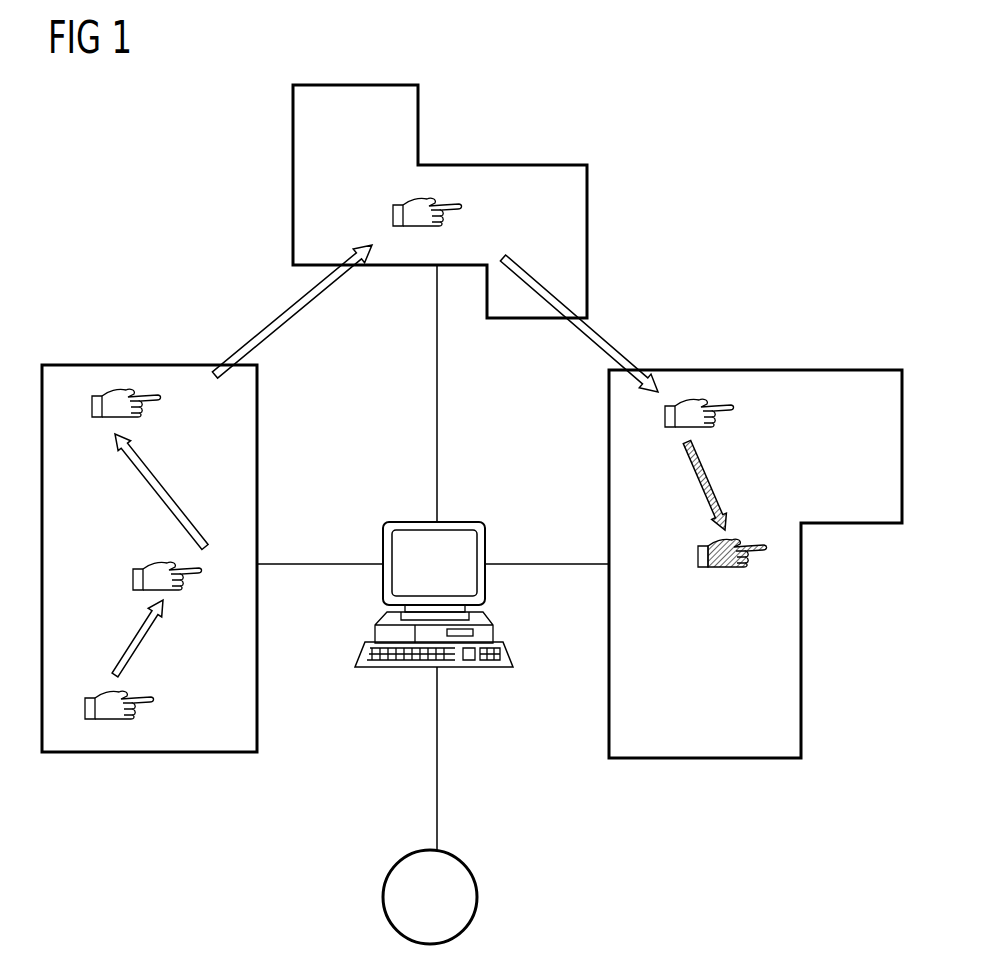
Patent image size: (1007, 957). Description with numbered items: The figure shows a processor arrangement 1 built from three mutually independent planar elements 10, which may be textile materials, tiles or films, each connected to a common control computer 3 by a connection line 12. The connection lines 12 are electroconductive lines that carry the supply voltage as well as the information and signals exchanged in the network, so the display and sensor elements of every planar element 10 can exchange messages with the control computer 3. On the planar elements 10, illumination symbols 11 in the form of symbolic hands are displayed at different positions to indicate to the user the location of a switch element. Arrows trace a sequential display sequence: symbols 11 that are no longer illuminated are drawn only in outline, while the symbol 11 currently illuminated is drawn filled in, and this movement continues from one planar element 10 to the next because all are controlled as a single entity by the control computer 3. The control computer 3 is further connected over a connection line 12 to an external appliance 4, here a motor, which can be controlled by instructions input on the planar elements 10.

The processor arrangement 1 is at (705, 128).
The control computer 3 is at (460, 520).
The external appliance 4 is at (478, 897).
The planar element 10 is at (527, 163).
The illumination symbol 11 is at (395, 205).
The connection line 12 is at (437, 373).